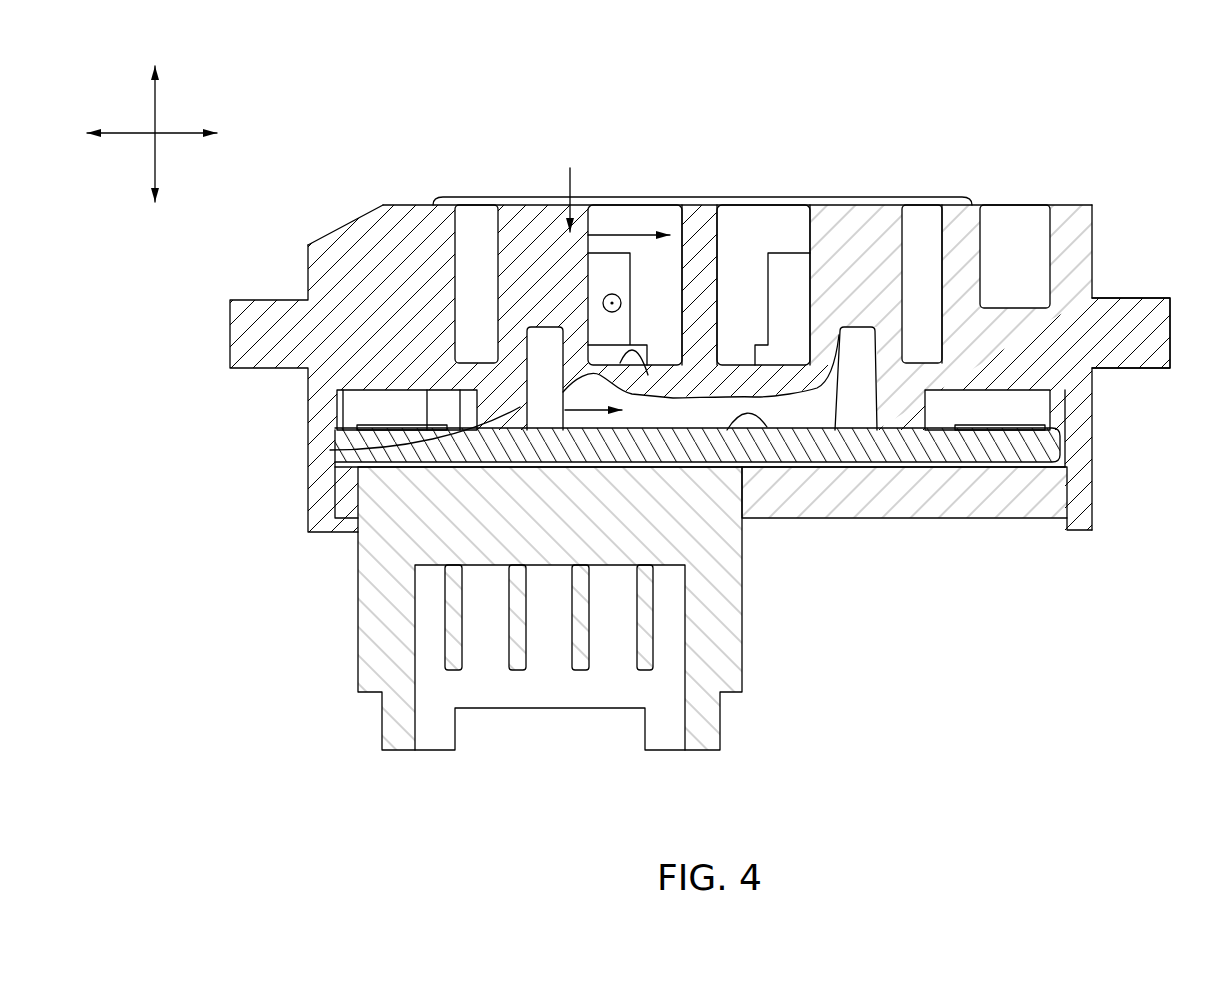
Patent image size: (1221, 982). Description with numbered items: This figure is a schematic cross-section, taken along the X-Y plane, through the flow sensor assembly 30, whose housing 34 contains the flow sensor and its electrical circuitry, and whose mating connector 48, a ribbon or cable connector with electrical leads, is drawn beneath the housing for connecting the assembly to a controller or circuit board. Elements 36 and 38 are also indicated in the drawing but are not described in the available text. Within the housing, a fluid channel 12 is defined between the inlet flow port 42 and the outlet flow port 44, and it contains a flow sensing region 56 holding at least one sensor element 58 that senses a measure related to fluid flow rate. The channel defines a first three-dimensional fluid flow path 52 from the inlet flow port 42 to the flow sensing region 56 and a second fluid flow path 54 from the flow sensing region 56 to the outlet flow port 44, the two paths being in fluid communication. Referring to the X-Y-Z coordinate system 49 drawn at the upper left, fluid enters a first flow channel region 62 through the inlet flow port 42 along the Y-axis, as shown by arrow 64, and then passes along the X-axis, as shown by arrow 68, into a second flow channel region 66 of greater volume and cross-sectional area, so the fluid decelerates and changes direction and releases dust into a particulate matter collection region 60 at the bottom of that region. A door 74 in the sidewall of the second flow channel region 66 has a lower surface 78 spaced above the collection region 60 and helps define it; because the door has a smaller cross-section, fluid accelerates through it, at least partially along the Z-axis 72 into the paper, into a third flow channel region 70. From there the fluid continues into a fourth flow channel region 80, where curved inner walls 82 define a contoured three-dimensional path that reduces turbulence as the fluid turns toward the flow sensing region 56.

The fluid channel 12 is at (667, 210).
The flow sensor assembly 30 is at (1032, 100).
The housing 34 is at (1088, 203).
The mounting flange 36 is at (1145, 298).
The lower layer 38 is at (1016, 520).
The inlet flow port 42 is at (542, 197).
The outlet flow port 44 is at (855, 203).
The mating connector 48 is at (745, 660).
The X-Y-Z coordinate system 49 is at (197, 170).
The first three-dimensional fluid flow path 52 is at (537, 428).
The second fluid flow path 54 is at (862, 423).
The flow sensing region 56 is at (706, 430).
The sensor element 58 is at (767, 427).
The particulate matter collection region 60 is at (600, 373).
The first flow channel region 62 is at (520, 217).
The arrow 64 is at (571, 178).
The second flow channel region 66 is at (673, 243).
The arrow 68 is at (605, 235).
The third flow channel region 70 is at (630, 283).
The Z-axis 72 is at (623, 298).
The door 74 is at (623, 315).
The lower surface 78 is at (620, 352).
The fourth flow channel region 80 is at (558, 335).
The inner walls 82 is at (330, 450).